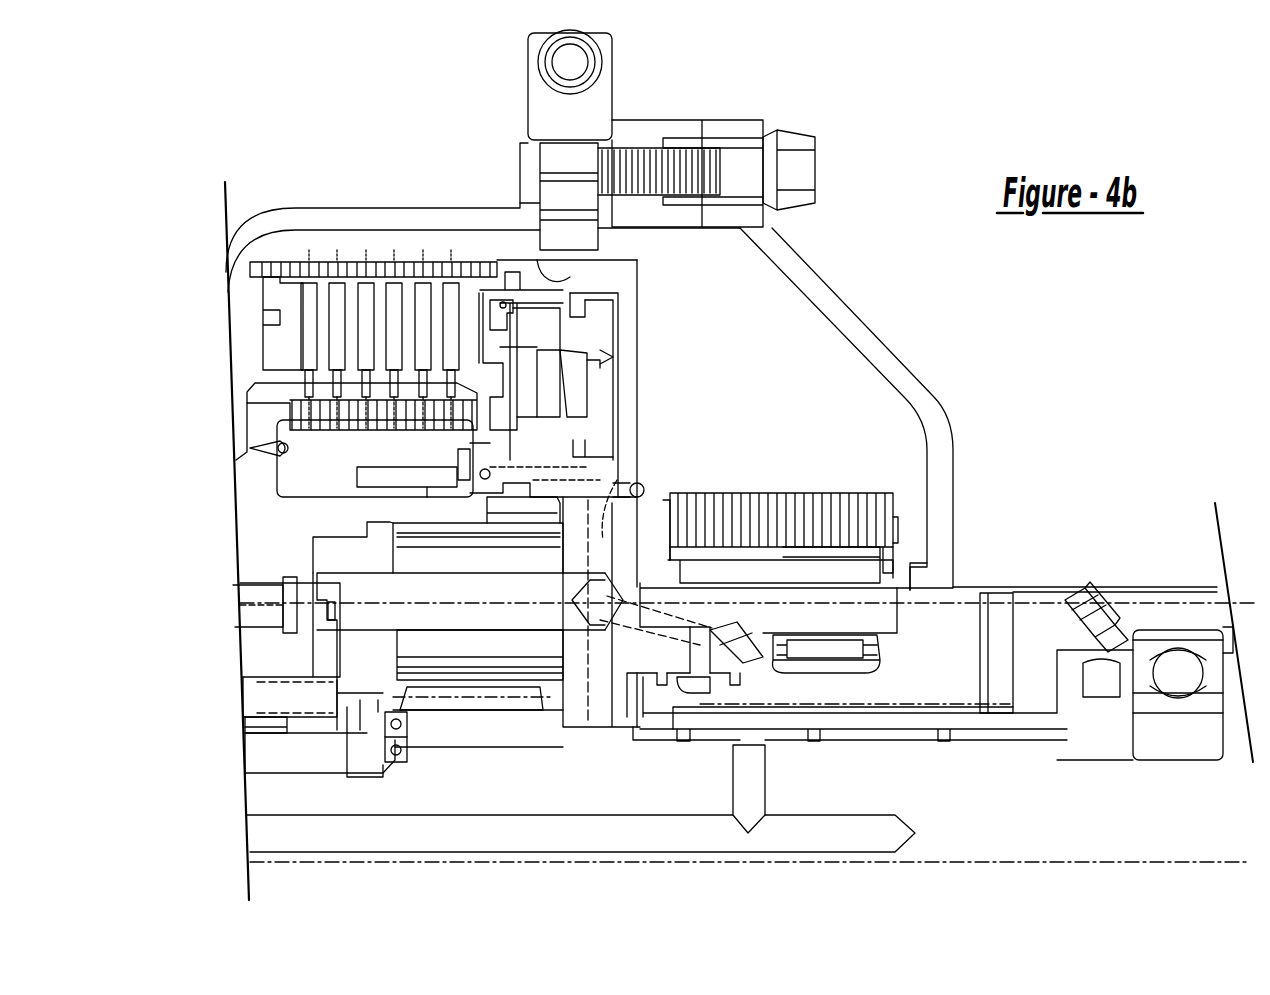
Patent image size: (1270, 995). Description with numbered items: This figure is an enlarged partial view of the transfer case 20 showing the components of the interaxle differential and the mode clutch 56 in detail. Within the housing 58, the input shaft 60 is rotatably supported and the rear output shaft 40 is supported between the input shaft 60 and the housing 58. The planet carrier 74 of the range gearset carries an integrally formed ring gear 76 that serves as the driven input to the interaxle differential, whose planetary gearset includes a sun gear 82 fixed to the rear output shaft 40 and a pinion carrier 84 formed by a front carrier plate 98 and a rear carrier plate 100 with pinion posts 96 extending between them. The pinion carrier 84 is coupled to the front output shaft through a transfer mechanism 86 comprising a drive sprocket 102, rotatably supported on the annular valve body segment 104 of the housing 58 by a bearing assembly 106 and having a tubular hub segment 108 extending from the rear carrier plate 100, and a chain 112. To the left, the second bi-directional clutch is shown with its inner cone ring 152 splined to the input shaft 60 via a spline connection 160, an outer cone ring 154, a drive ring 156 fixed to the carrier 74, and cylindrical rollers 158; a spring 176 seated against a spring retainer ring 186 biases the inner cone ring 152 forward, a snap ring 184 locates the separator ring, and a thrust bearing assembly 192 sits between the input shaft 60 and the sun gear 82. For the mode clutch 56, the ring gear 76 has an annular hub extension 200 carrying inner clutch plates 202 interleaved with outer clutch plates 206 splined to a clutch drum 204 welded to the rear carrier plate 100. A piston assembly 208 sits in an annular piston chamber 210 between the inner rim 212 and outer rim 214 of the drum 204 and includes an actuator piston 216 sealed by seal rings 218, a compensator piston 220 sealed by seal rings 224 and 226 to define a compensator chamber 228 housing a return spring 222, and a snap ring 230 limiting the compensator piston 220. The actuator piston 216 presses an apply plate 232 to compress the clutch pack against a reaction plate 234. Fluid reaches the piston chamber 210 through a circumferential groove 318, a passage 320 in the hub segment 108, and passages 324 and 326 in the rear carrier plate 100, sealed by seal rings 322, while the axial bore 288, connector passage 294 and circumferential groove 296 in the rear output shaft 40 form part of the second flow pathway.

The transfer case 20 is at (907, 153).
The rear output shaft 40 is at (1030, 810).
The mode clutch 56 is at (310, 460).
The housing 58 is at (813, 290).
The input shaft 60 is at (310, 753).
The planet carrier 74 is at (253, 470).
The ring gear 76 is at (540, 497).
The sun gear 82 is at (459, 749).
The pinion carrier 84 is at (638, 420).
The transfer mechanism 86 is at (903, 520).
The pinion post 96 is at (453, 610).
The front carrier plate 98 is at (350, 557).
The rear carrier plate 100 is at (587, 723).
The drive sprocket 102 is at (827, 570).
The annular valve body segment 104 is at (867, 690).
The bearing assembly 106 is at (847, 650).
The tubular hub segment 108 is at (855, 624).
The chain 112 is at (793, 507).
The inner cone ring 152 is at (260, 652).
The outer cone ring 154 is at (247, 627).
The drive ring 156 is at (257, 587).
The cylindrical rollers 158 is at (240, 600).
The spline connection 160 is at (263, 732).
The spring 176 is at (263, 697).
The snap ring 184 is at (298, 597).
The spring retainer ring 186 is at (347, 707).
The thrust bearing assembly 192 is at (393, 738).
The annular hub extension 200 is at (257, 417).
The inner clutch plates 202 is at (307, 357).
The clutch drum 204 is at (633, 303).
The outer clutch plates 206 is at (347, 293).
The piston assembly 208 is at (560, 297).
The annular piston chamber 210 is at (600, 356).
The inner rim 212 is at (377, 477).
The outer rim 214 is at (469, 297).
The actuator piston 216 is at (600, 363).
The seal rings 218 is at (577, 308).
The compensator piston 220 is at (500, 350).
The return spring 222 is at (548, 387).
The seal ring 224 is at (503, 308).
The seal ring 226 is at (603, 468).
The compensator chamber 228 is at (577, 357).
The snap ring 230 is at (460, 463).
The apply plate 232 is at (491, 265).
The reaction plate 234 is at (291, 293).
The axial bore 288 is at (583, 848).
The connector passage 294 is at (755, 774).
The circumferential groove 296 is at (710, 733).
The circumferential groove 318 is at (680, 683).
The passage 320 is at (703, 637).
The seal rings 322 is at (660, 677).
The passage 324 is at (665, 615).
The passage 326 is at (605, 530).